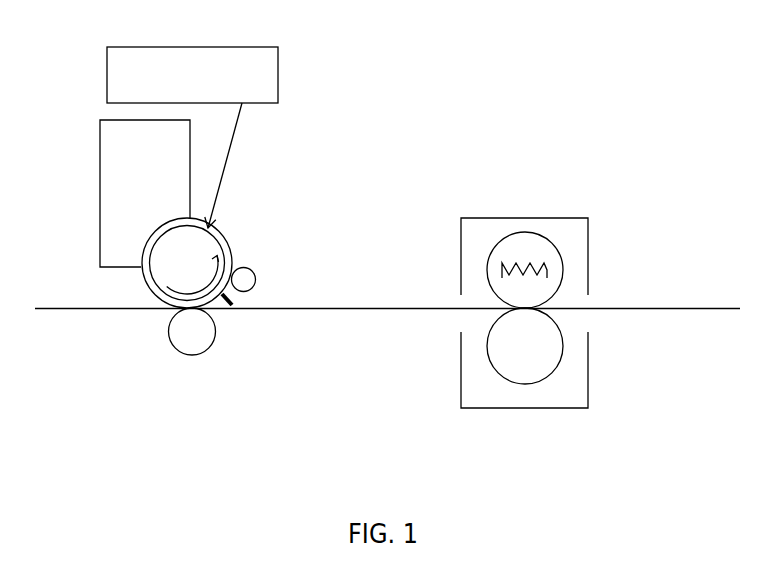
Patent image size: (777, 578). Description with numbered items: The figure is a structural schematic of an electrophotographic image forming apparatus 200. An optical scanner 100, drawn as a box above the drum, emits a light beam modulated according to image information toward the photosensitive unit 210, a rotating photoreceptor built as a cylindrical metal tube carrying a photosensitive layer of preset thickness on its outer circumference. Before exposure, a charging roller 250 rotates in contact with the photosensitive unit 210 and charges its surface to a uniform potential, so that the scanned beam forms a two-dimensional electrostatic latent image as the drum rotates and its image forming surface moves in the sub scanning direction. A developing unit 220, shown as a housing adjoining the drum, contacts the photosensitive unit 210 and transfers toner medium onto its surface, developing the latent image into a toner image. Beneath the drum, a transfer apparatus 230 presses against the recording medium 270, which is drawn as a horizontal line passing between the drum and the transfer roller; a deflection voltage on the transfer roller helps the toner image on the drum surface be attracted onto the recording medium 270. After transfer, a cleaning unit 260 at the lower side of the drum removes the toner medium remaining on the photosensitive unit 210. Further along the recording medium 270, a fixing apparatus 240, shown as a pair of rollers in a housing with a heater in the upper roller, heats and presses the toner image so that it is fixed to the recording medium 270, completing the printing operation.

The electrophotographic image forming apparatus 200 is at (47, 40).
The optical scanner 100 is at (265, 72).
The photosensitive unit 210 is at (207, 233).
The developing unit 220 is at (107, 163).
The transfer apparatus 230 is at (192, 338).
The fixing apparatus 240 is at (588, 219).
The charging roller 250 is at (245, 277).
The cleaning unit 260 is at (232, 303).
The recording medium 270 is at (119, 309).